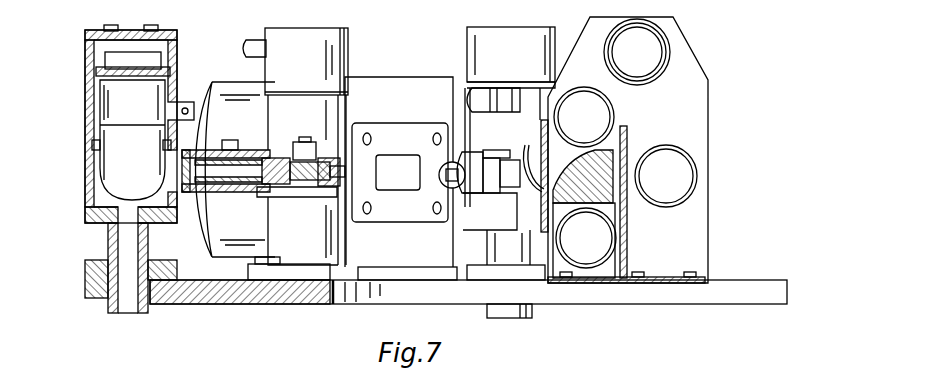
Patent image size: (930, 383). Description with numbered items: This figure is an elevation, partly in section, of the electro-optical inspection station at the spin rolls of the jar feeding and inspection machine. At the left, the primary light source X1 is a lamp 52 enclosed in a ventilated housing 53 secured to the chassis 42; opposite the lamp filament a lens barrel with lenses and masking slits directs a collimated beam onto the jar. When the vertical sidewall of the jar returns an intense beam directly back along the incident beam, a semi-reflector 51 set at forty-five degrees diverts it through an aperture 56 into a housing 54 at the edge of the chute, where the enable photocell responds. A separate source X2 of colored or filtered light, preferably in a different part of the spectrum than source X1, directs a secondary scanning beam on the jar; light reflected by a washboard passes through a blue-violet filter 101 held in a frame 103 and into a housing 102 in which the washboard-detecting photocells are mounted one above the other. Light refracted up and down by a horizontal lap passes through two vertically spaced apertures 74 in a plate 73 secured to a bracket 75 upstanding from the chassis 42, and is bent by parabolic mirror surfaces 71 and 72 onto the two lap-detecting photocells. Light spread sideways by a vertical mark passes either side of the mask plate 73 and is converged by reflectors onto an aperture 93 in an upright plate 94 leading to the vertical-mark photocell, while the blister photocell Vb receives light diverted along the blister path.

The chassis 42 is at (213, 292).
The semi-reflector 51 is at (325, 200).
The lamp 52 is at (146, 168).
The ventilated housing 53 is at (180, 48).
The housing 54 is at (345, 31).
The aperture 56 is at (306, 145).
The parabolic mirror surface 71 is at (597, 135).
The parabolic mirror surface 72 is at (602, 255).
The plate 73 is at (547, 212).
The apertures 74 is at (525, 157).
The bracket 75 is at (553, 260).
The aperture 93 is at (637, 148).
The upright plate 94 is at (627, 230).
The blue-violet filter 101 is at (400, 185).
The housing 102 is at (401, 178).
The frame 103 is at (392, 212).
The primary light source X1 is at (86, 140).
The secondary light source X2 is at (520, 63).
The blister photocell Vb is at (648, 63).